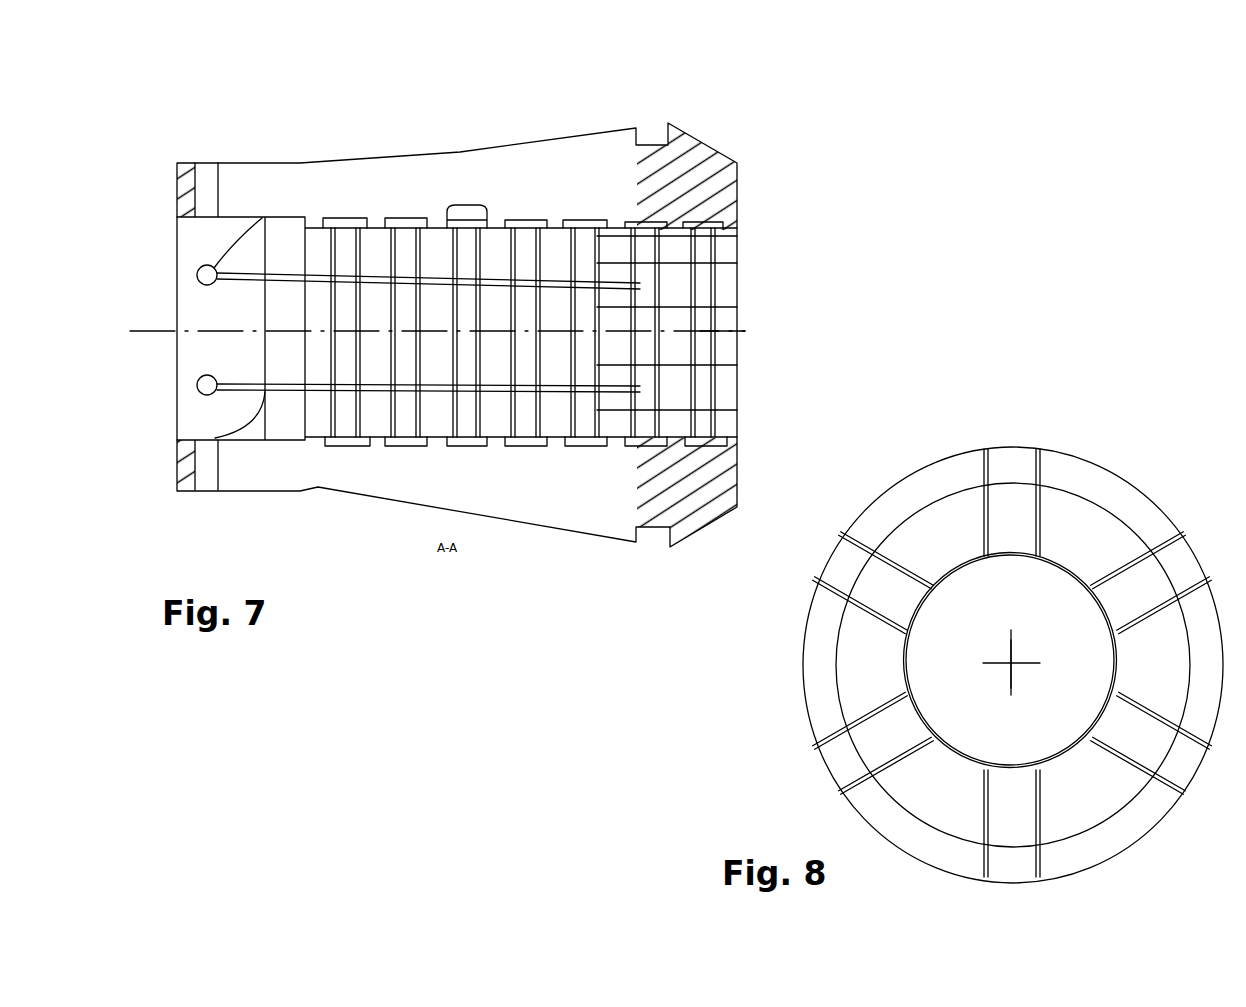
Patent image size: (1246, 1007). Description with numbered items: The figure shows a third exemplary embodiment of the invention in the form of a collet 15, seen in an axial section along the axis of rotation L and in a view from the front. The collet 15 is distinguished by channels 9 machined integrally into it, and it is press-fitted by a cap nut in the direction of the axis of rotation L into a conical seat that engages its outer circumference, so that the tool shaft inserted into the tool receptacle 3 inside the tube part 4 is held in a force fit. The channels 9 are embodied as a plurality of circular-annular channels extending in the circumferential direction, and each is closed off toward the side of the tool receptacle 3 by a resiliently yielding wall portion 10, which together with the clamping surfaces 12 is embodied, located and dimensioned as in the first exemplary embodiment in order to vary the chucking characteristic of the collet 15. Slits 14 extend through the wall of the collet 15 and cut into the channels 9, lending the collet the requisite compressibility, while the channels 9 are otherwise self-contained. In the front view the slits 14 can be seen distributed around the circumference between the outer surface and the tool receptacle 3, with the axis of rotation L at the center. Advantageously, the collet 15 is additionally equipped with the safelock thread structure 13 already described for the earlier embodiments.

In FIG. 7, the tool receptacle 3 is at (763, 399).
In FIG. 8, the tool receptacle 3 is at (973, 665).
In FIG. 7, the tube part 4 is at (352, 183).
In FIG. 7, the channels 9 is at (525, 225).
In FIG. 7, the resiliently yielding wall portions 10 is at (467, 205).
In FIG. 7, the clamping surfaces 12 is at (585, 420).
In FIG. 7, the safelock thread structure 13 is at (213, 410).
In FIG. 8, the slits 14 is at (1037, 450).
In FIG. 7, the collet 15 is at (386, 118).
In FIG. 8, the collet 15 is at (1180, 446).
In FIG. 7, the axis of rotation L is at (755, 333).
In FIG. 8, the axis of rotation L is at (1016, 668).